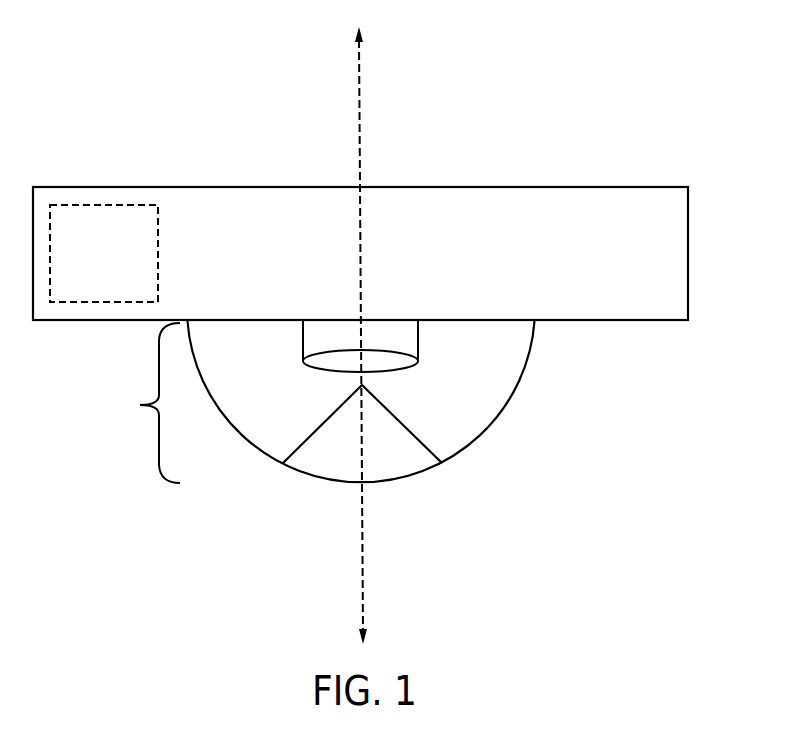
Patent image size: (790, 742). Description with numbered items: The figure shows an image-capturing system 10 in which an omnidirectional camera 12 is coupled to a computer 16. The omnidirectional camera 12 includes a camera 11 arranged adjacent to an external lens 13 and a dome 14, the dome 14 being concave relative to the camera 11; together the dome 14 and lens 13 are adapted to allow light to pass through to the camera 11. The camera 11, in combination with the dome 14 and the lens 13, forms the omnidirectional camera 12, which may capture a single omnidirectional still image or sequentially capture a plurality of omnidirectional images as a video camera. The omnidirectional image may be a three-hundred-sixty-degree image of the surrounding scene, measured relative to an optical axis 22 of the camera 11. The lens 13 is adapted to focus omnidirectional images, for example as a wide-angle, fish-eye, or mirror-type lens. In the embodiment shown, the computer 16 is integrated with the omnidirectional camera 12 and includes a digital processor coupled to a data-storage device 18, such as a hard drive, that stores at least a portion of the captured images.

The image-capturing system 10 is at (679, 136).
The camera 11 is at (419, 338).
The omnidirectional camera 12 is at (140, 405).
The external lens 13 is at (413, 430).
The dome 14 is at (502, 417).
The computer 16 is at (688, 266).
The data-storage device 18 is at (100, 205).
The optical axis 22 is at (364, 567).